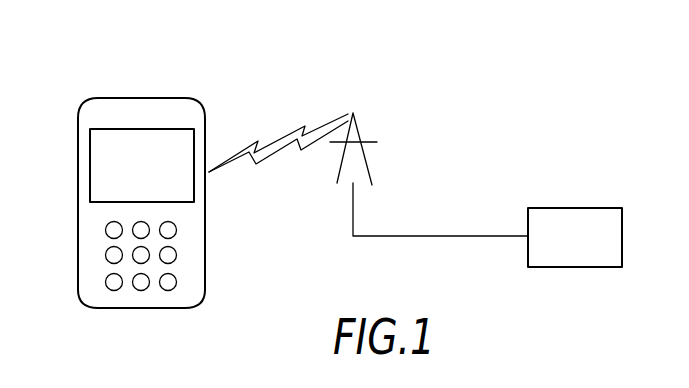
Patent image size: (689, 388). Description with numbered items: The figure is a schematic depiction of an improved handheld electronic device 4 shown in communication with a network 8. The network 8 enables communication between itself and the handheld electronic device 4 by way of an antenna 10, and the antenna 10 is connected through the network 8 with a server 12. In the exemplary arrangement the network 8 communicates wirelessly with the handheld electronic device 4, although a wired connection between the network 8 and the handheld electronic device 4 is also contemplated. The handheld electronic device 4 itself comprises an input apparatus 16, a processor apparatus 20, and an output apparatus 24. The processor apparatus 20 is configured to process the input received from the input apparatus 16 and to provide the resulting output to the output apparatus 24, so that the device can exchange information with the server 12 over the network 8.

The handheld electronic device 4 is at (116, 163).
The input apparatus 16 is at (90, 215).
The processor apparatus 20 is at (90, 232).
The output apparatus 24 is at (90, 250).
The antenna 10 is at (380, 162).
The network 8 is at (418, 223).
The server 12 is at (573, 208).